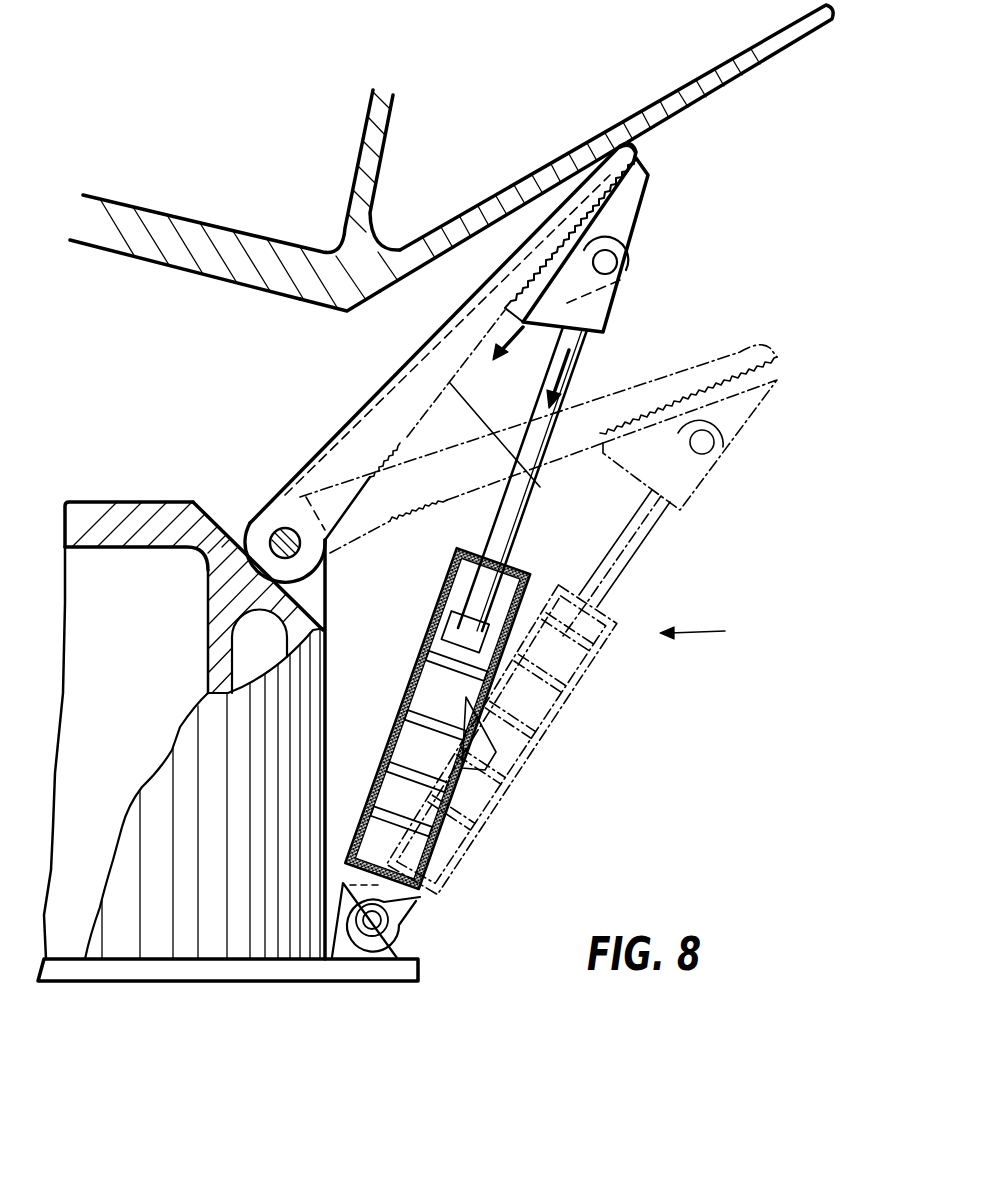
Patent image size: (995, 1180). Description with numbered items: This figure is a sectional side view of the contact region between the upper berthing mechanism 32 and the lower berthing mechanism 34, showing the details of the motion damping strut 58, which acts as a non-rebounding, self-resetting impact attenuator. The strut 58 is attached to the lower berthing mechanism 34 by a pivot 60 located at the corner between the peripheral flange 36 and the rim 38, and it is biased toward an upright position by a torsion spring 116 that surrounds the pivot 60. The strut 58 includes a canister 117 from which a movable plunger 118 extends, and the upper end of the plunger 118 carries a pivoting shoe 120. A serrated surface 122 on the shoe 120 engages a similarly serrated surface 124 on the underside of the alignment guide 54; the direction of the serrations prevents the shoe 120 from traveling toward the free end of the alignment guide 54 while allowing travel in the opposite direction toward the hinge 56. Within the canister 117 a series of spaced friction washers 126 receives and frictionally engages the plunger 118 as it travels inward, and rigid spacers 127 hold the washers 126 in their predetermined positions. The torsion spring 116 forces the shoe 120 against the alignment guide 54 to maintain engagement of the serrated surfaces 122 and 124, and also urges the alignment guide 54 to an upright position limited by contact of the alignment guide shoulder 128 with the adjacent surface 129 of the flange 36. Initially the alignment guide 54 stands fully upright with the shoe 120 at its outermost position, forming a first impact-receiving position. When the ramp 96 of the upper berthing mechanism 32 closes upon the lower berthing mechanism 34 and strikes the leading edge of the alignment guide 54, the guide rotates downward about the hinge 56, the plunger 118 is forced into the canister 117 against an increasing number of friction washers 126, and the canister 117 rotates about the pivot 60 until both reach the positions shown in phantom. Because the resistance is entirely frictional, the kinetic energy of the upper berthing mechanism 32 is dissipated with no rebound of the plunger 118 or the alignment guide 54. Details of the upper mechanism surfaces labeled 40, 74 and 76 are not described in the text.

The upper berthing mechanism 32 is at (143, 279).
The lower berthing mechanism 34 is at (115, 987).
The peripheral flange 36 is at (240, 927).
The rim 38 is at (407, 975).
The top plate 40 is at (107, 500).
The alignment guide 54 is at (357, 418).
The hinge 56 is at (286, 527).
The motion damping strut 58 is at (708, 631).
The pivot 60 is at (397, 922).
The lower surface of frame member 74 is at (236, 288).
The junction 76 is at (341, 316).
The ramp 96 is at (788, 45).
The torsion spring 116 is at (417, 905).
The canister 117 is at (397, 717).
The plunger 118 is at (593, 347).
The pivoting shoe 120 is at (637, 207).
The serrated surface 122 is at (641, 165).
The serrated surface 124 is at (540, 487).
The friction washers 126 is at (421, 648).
The spacers 127 is at (463, 770).
The alignment guide shoulder 128 is at (203, 565).
The adjacent surface 129 is at (210, 507).